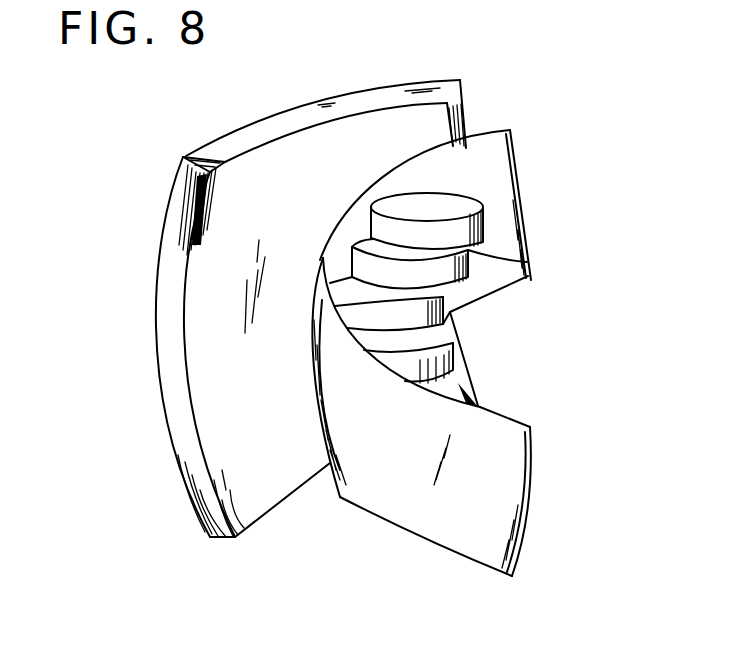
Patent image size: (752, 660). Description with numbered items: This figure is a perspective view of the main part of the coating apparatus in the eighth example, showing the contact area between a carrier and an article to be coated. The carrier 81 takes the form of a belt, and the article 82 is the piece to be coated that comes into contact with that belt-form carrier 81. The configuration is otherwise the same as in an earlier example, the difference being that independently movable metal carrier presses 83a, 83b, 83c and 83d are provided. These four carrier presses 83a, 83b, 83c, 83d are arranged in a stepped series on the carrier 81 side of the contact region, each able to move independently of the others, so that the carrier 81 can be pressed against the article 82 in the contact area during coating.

The carrier 81 is at (376, 492).
The article 82 is at (224, 149).
The metal carrier press 83a is at (457, 208).
The metal carrier press 83b is at (527, 262).
The metal carrier press 83c is at (450, 312).
The metal carrier press 83d is at (462, 357).